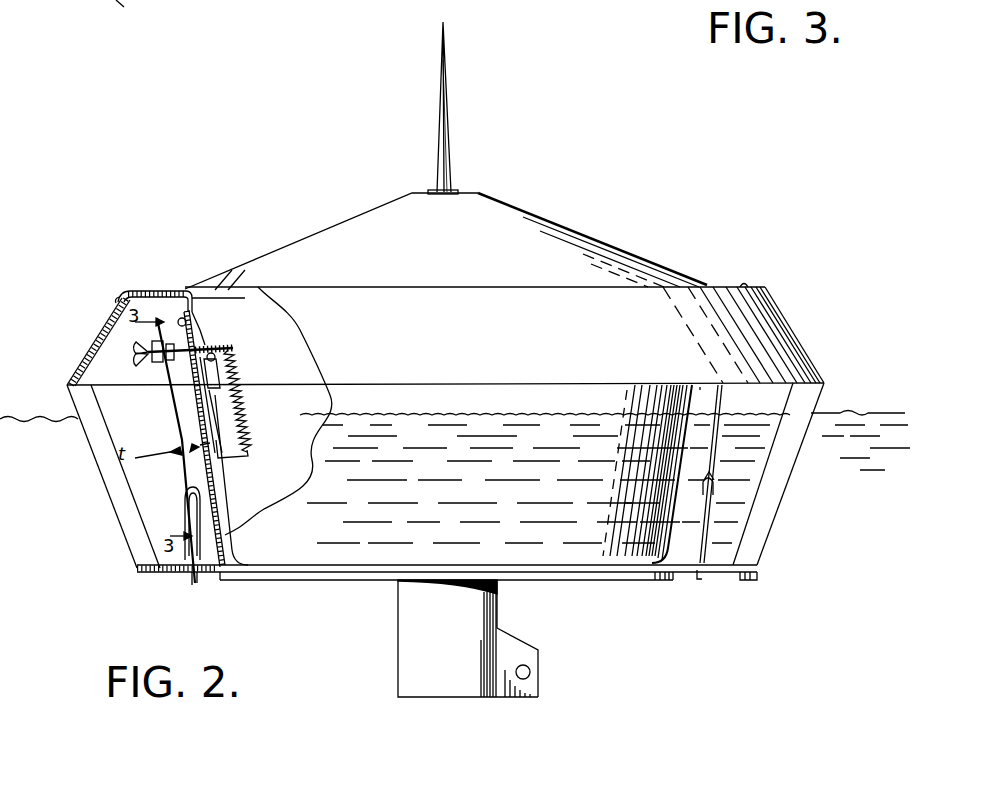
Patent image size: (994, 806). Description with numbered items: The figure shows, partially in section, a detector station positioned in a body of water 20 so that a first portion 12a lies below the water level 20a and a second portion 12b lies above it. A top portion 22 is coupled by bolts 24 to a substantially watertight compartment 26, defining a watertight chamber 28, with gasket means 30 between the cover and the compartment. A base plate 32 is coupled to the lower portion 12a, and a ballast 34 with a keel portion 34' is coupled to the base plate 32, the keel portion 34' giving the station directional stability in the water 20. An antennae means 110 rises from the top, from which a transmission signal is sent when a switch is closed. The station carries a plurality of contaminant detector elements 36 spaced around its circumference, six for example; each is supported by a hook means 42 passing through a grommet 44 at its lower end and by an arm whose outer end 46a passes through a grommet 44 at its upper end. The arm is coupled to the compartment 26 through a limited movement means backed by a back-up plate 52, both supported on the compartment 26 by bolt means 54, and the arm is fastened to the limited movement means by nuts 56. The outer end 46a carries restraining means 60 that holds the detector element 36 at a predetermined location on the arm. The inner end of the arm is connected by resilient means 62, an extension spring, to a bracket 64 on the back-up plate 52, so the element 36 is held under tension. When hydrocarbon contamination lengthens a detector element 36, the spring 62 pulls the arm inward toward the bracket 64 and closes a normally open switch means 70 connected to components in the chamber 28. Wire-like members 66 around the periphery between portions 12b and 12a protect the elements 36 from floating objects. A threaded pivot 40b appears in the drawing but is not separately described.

The antennae means 110 is at (447, 72).
The top portion 22 is at (536, 213).
The bolts 24 is at (160, 290).
The gasket means 30 is at (122, 300).
The second portion 12b is at (800, 300).
The first portion 12a is at (855, 479).
The base plate 32 is at (150, 575).
The hook means 42 is at (184, 583).
The watertight compartment 26 is at (228, 522).
The watertight chamber 28 is at (262, 503).
The body of water 20 is at (44, 519).
The water level 20a is at (866, 412).
The grommet 44 is at (155, 354).
The outer end of the arm means 46a is at (148, 353).
The bolt 40b is at (233, 348).
The restraining means 60 is at (142, 364).
The resilient means 62 is at (222, 386).
The nuts 56 is at (234, 347).
The bolt means 54 is at (215, 297).
The back-up plate 52 is at (196, 328).
The bracket 64 is at (228, 458).
The normally open switch means 70 is at (245, 366).
The contaminant detector elements 36 is at (182, 413).
The wire-like members 66 is at (760, 558).
The ballast 34 is at (478, 638).
The keel portion 34' is at (551, 662).